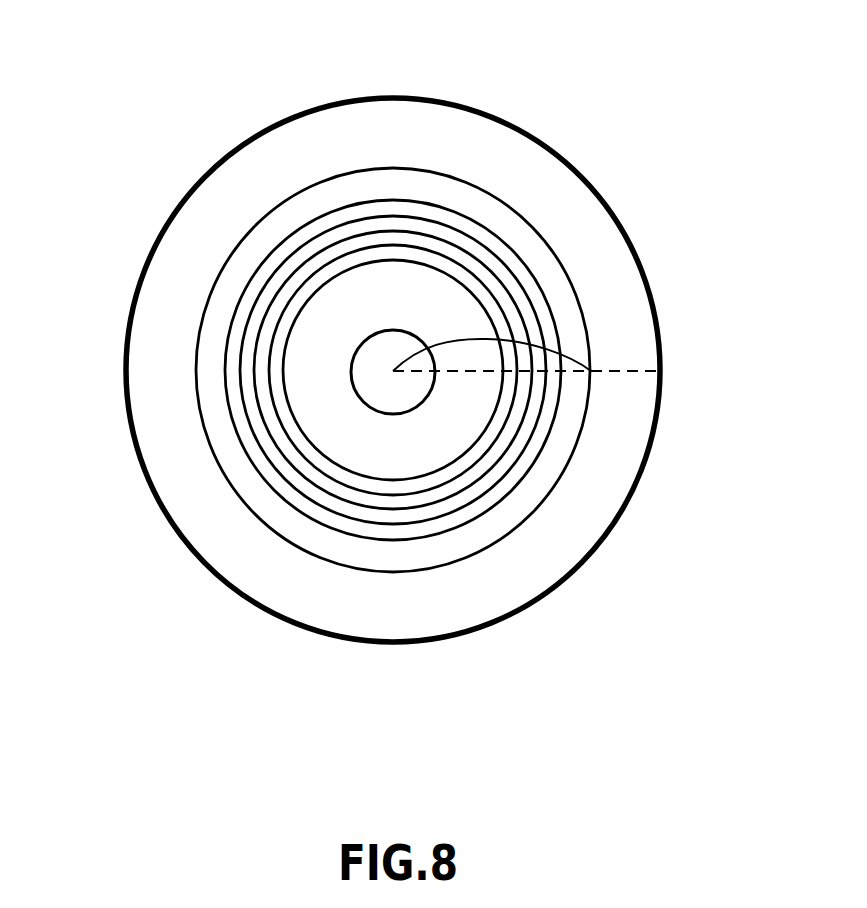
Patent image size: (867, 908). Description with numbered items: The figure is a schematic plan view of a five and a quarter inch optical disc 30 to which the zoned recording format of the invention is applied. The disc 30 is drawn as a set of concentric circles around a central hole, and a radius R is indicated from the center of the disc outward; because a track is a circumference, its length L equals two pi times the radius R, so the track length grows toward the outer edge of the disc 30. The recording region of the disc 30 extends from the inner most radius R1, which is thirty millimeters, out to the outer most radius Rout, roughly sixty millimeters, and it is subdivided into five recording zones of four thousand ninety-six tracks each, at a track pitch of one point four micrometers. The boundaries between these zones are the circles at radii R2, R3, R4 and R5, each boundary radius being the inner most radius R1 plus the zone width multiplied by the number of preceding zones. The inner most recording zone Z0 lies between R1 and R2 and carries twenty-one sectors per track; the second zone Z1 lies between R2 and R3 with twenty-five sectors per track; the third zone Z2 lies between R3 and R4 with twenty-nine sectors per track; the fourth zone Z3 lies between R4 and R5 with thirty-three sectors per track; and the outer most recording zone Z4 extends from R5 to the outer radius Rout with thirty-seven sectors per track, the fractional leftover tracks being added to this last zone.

The optical disc 30 is at (574, 165).
The radius R is at (462, 342).
The outer most radius Rout is at (591, 371).
The inner most radius R1 is at (502, 371).
The boundary radius R2 is at (517, 371).
The boundary radius R3 is at (532, 371).
The boundary radius R4 is at (547, 371).
The boundary radius R5 is at (561, 371).
The inner most recording zone Z0 is at (280, 353).
The second recording zone Z1 is at (257, 365).
The third recording zone Z2 is at (242, 382).
The fourth recording zone Z3 is at (235, 397).
The outer most recording zone Z4 is at (218, 427).
The circumference L is at (340, 473).